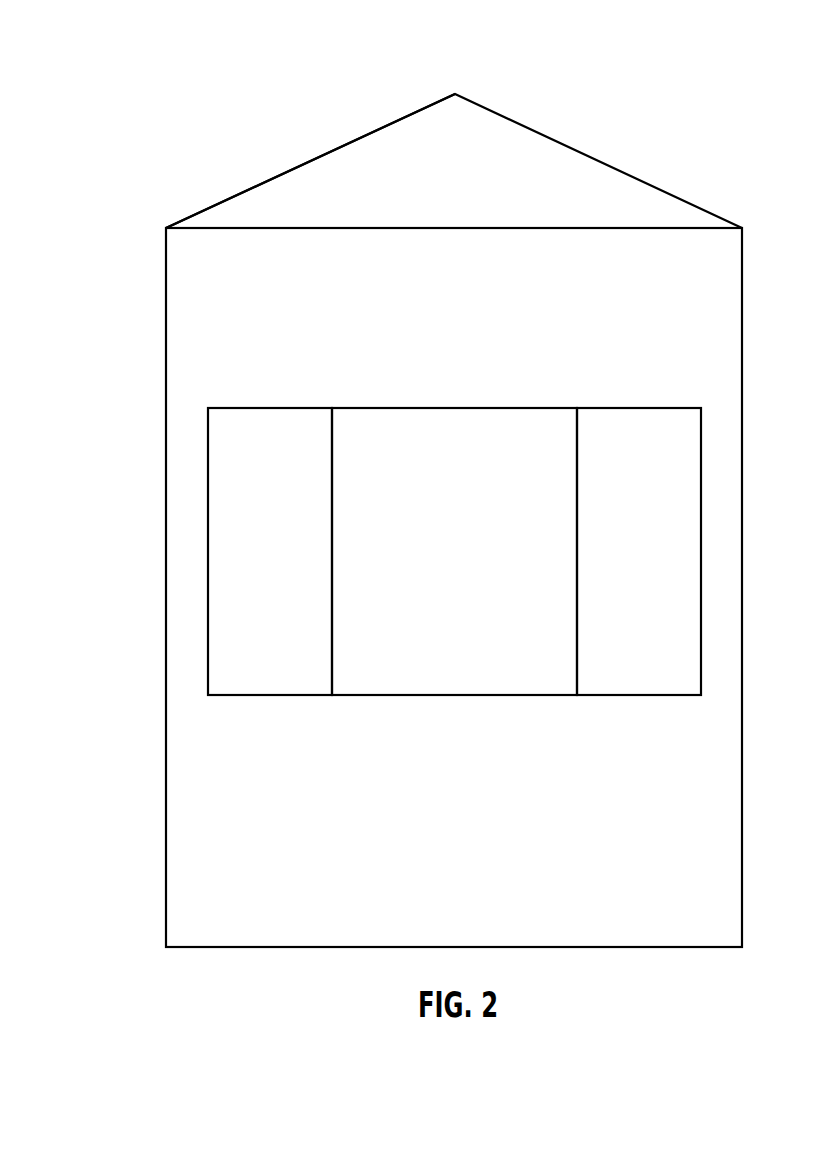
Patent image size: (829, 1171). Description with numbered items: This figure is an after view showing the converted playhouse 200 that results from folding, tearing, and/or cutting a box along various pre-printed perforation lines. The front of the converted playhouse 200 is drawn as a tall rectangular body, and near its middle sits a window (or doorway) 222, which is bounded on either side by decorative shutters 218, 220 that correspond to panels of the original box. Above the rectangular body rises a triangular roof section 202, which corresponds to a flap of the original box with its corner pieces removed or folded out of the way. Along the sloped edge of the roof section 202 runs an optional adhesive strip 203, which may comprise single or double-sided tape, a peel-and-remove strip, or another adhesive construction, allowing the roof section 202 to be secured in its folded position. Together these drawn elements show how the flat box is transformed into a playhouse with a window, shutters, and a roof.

The converted playhouse 200 is at (112, 72).
The roof section 202 is at (477, 174).
The adhesive strip 203 is at (297, 167).
The decorative shutter 218 is at (292, 566).
The decorative shutter 220 is at (661, 566).
The window 222 is at (476, 562).